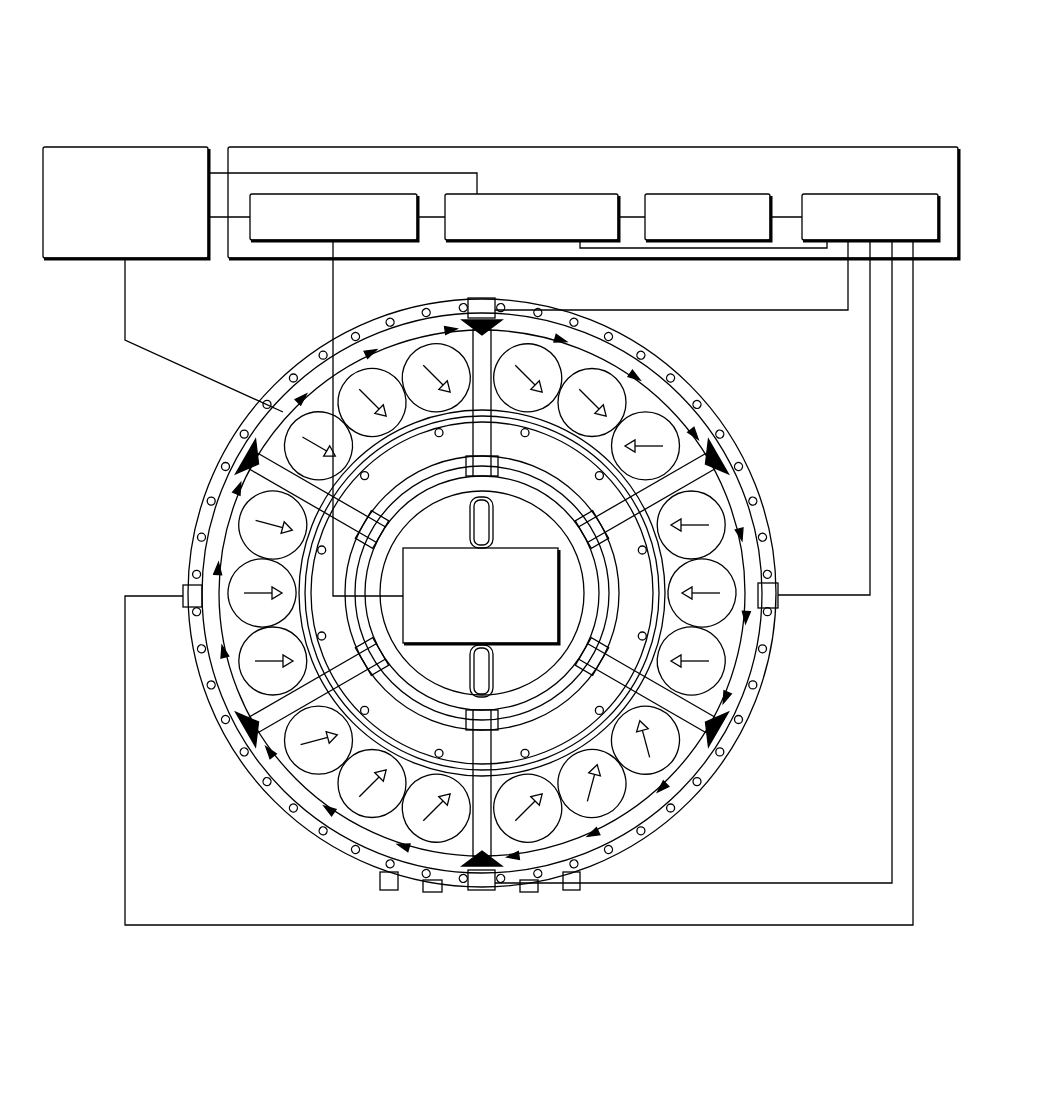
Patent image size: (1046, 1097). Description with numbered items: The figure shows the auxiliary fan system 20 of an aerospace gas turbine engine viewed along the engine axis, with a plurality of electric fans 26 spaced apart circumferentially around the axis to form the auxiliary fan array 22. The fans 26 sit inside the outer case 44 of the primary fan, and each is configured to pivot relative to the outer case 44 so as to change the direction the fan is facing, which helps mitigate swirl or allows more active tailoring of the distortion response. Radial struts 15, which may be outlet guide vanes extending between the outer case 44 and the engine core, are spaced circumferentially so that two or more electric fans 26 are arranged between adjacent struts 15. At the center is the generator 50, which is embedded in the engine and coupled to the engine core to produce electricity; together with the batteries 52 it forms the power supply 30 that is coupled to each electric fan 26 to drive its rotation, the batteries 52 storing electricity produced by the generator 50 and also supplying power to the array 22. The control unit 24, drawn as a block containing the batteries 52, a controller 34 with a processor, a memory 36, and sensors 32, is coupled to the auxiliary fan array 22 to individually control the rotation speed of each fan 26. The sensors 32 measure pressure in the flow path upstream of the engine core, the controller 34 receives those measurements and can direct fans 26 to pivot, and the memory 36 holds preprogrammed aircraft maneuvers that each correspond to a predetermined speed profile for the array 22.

The auxiliary fan system 20 is at (186, 62).
The auxiliary fan array 22 is at (80, 147).
The control unit 24 is at (300, 147).
The batteries 52 is at (318, 194).
The controller 34 is at (497, 194).
The memory 36 is at (735, 194).
The sensors 32 is at (885, 194).
The electric fans 26 is at (376, 352).
The power supply 30 is at (446, 522).
The struts 15 is at (508, 333).
The outer case 44 is at (216, 452).
The generator 50 is at (496, 538).